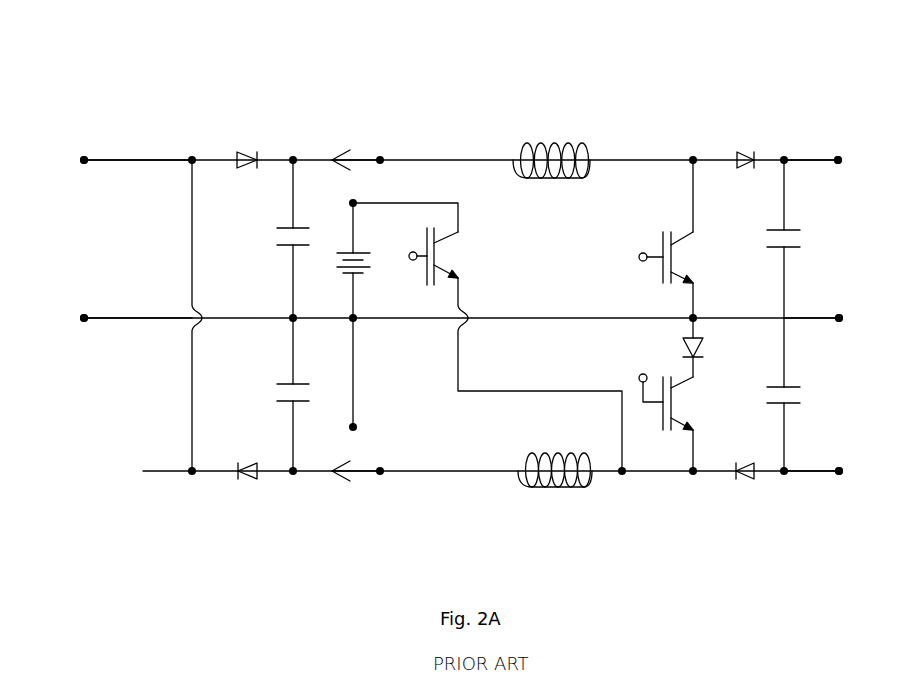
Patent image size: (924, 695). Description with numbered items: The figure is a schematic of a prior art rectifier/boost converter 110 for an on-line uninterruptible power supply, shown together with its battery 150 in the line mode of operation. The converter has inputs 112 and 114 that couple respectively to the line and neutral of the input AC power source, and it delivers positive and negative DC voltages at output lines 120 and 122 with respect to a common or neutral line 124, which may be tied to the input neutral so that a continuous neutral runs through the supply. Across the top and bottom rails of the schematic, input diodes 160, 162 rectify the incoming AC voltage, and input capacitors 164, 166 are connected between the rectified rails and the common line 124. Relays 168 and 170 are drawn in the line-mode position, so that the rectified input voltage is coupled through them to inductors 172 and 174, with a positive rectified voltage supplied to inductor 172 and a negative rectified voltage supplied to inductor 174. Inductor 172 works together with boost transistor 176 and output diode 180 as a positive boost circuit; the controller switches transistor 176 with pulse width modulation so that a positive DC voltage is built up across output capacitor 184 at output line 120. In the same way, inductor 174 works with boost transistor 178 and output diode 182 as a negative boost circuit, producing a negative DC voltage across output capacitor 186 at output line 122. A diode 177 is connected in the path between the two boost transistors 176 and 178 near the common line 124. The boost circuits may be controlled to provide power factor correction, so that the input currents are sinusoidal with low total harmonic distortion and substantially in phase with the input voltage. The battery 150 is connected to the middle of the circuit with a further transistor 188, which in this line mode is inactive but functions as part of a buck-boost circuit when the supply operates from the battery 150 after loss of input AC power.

The rectifier/boost converter 110 is at (617, 68).
The input 112 is at (86, 155).
The input 114 is at (86, 313).
The output line 120 is at (840, 160).
The output line 122 is at (841, 473).
The common line 124 is at (841, 320).
The battery 150 is at (368, 262).
The input diode 160 is at (250, 154).
The input diode 162 is at (250, 482).
The input capacitor 164 is at (276, 240).
The input capacitor 166 is at (276, 396).
The relay 168 is at (364, 158).
The relay 170 is at (360, 475).
The inductor 172 is at (550, 143).
The inductor 174 is at (566, 490).
The boost transistor 176 is at (680, 255).
The diode 177 is at (700, 345).
The boost transistor 178 is at (684, 402).
The output diode 180 is at (740, 154).
The output diode 182 is at (745, 482).
The output capacitor 184 is at (802, 238).
The output capacitor 186 is at (802, 395).
The transistor 188 is at (446, 256).